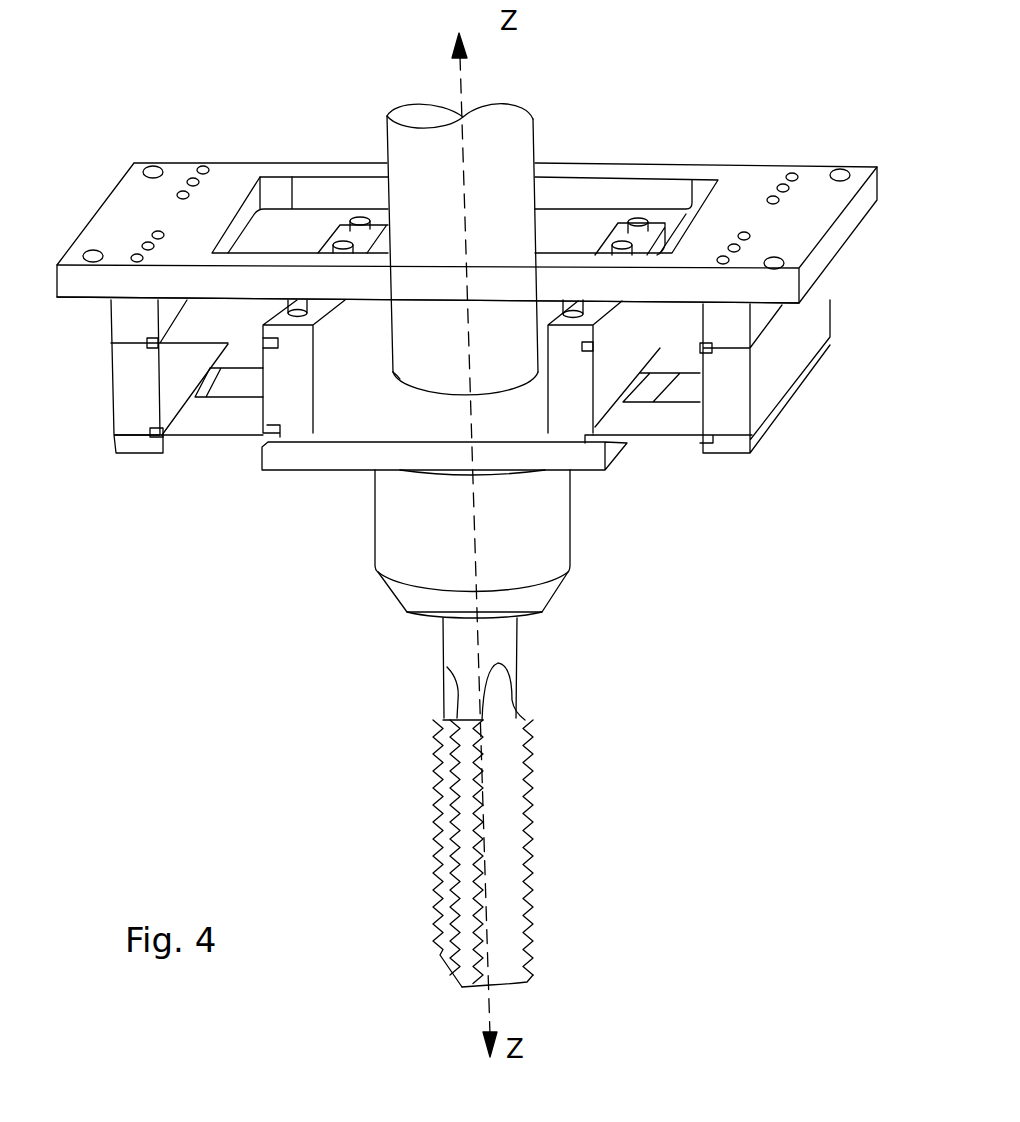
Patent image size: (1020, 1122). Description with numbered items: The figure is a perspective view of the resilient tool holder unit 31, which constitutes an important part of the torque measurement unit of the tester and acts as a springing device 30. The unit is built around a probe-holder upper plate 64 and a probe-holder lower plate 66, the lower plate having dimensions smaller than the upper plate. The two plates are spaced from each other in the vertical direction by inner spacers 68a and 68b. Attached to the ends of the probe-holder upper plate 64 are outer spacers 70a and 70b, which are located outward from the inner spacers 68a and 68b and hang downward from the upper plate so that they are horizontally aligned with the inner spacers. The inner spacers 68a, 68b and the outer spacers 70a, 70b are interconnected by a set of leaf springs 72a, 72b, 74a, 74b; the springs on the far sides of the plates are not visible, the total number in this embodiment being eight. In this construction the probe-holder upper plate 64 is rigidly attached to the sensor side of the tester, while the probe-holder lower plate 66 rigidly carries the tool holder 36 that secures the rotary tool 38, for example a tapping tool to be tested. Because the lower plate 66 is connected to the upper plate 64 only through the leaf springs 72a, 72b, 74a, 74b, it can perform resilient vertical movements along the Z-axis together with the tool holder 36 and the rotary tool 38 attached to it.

The springing device 30 is at (708, 518).
The resilient tool holder unit 31 is at (165, 437).
The tool holder 36 is at (553, 530).
The rotary tool 38 is at (465, 772).
The probe-holder upper plate 64 is at (743, 180).
The probe-holder lower plate 66 is at (362, 457).
The inner spacer 68a is at (285, 418).
The inner spacer 68b is at (575, 358).
The outer spacer 70a is at (126, 389).
The outer spacer 70b is at (730, 413).
The leaf spring 72a is at (203, 425).
The leaf spring 72b is at (250, 362).
The leaf spring 74a is at (662, 430).
The leaf spring 74b is at (670, 358).